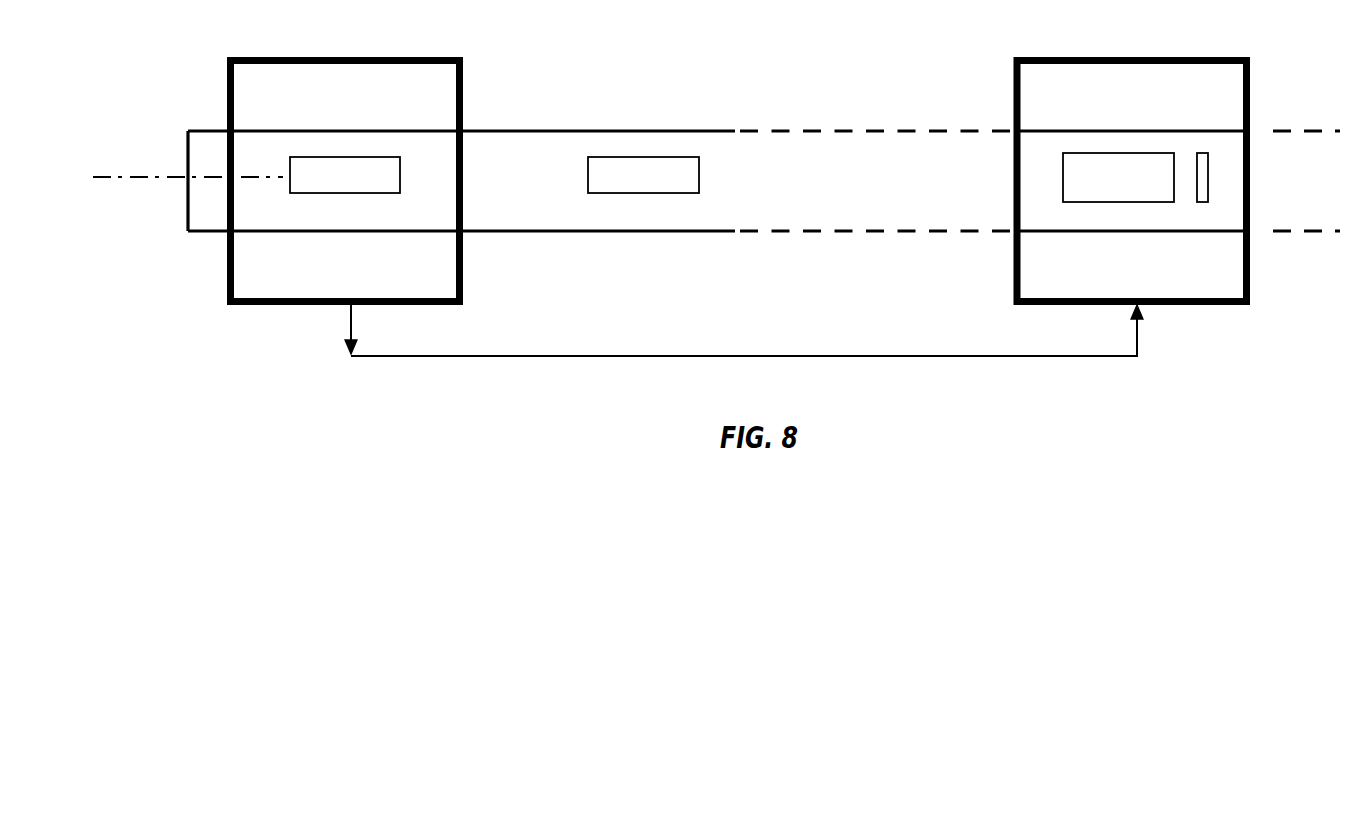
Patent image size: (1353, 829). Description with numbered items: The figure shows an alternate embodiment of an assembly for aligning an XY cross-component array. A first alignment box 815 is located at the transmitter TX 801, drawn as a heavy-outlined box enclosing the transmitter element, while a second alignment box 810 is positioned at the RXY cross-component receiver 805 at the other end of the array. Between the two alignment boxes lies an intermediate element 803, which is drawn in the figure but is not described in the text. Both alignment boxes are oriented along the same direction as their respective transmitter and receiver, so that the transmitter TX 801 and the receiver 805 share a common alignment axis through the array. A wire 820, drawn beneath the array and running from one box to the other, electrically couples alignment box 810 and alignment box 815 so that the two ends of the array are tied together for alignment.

The TX 801 is at (310, 167).
The beam expander element BX 803 is at (682, 173).
The RXY cross-component receiver 805 is at (1158, 191).
The alignment box 810 is at (1214, 57).
The alignment box 815 is at (417, 57).
The wire 820 is at (926, 356).